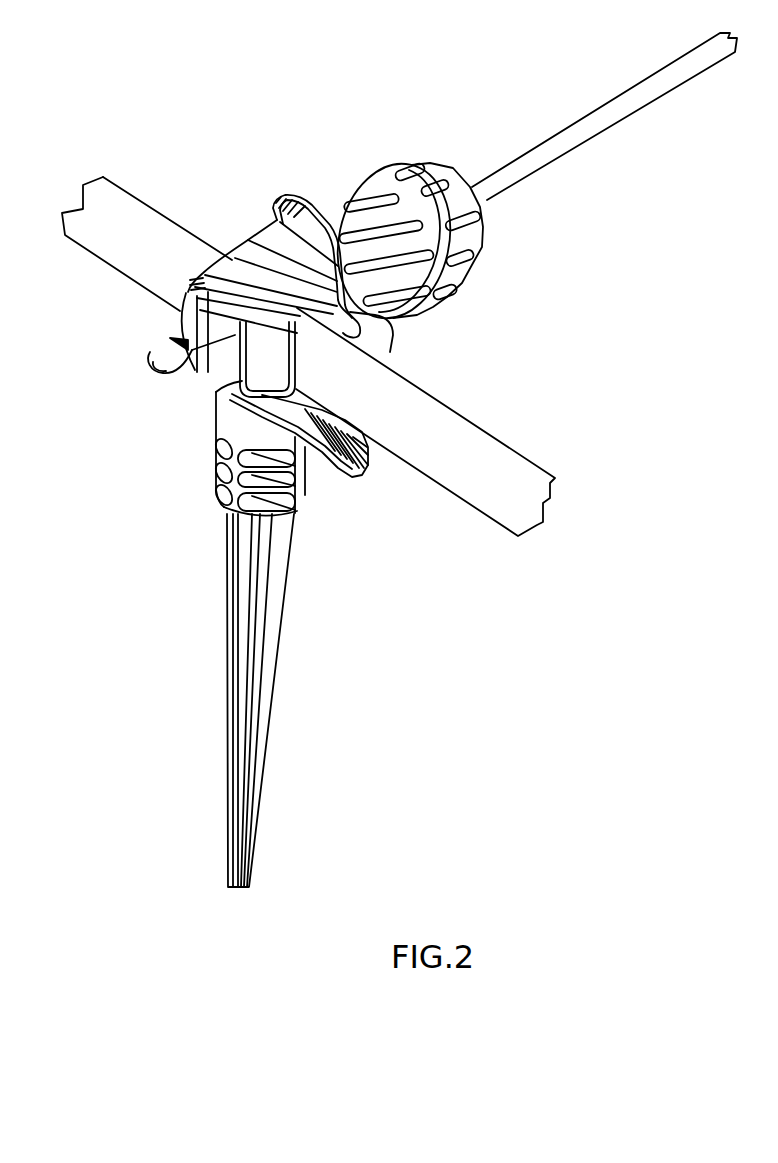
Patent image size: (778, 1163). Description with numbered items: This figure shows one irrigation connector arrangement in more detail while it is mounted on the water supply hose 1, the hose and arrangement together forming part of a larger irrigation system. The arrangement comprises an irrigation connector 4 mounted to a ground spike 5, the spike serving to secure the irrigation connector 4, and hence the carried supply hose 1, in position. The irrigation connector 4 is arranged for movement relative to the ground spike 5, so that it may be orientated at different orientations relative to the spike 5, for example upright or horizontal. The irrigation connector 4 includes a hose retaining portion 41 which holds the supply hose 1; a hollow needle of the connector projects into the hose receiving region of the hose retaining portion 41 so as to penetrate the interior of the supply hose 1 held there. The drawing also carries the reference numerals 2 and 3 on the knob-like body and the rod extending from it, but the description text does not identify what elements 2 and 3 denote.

The water supply hose 1 is at (500, 458).
The knob 2 is at (437, 290).
The threaded rod 3 is at (597, 118).
The irrigation connector 4 is at (348, 215).
The hose retaining portion 41 is at (187, 312).
The ground spike 5 is at (245, 605).